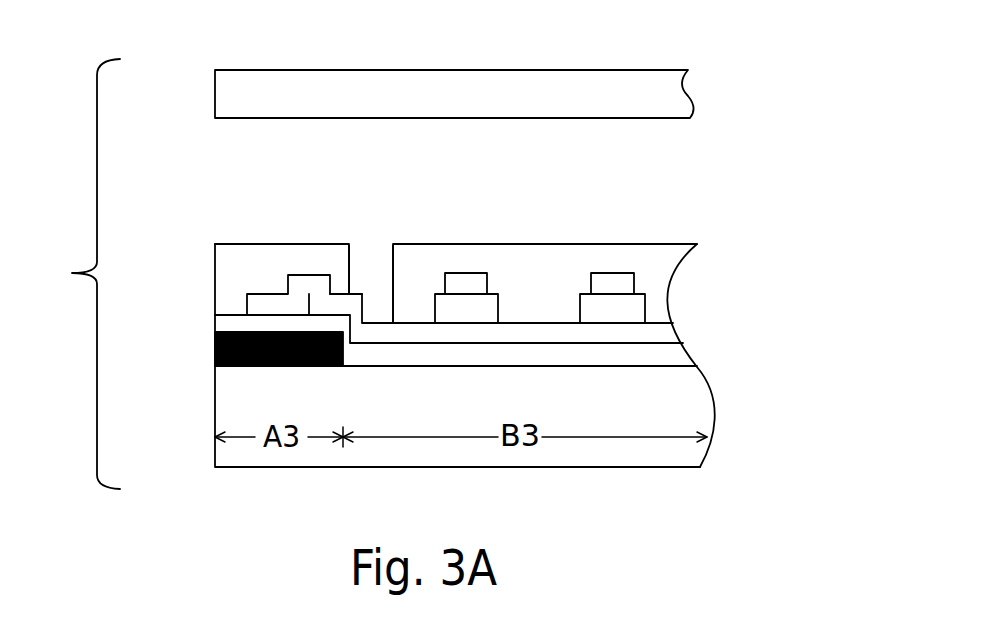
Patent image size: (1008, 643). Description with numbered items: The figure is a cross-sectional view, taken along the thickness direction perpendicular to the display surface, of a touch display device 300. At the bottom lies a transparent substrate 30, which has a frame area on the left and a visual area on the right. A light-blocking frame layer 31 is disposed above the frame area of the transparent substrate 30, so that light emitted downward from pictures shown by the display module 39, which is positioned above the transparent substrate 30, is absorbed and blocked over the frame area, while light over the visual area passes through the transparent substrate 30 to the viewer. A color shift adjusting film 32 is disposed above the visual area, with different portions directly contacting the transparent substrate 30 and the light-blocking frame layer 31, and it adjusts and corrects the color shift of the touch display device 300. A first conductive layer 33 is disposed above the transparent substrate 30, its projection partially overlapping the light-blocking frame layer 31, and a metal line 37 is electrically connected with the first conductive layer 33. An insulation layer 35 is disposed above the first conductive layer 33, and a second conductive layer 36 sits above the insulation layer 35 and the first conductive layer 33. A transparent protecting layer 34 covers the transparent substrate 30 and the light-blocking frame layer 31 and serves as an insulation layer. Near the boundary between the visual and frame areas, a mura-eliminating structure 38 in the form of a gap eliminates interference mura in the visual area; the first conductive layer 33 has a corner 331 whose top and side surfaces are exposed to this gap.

The touch display device 300 is at (63, 290).
The transparent substrate 30 is at (232, 417).
The light-blocking frame layer 31 is at (215, 355).
The color shift adjusting film 32 is at (428, 355).
The first conductive layer 33 is at (325, 305).
The corner 331 is at (362, 293).
The transparent protecting layer 34 is at (237, 258).
The insulation layer 35 is at (468, 312).
The second conductive layer 36 is at (618, 283).
The metal line 37 is at (272, 305).
The mura-eliminating structure 38 is at (370, 265).
The display module 39 is at (387, 88).